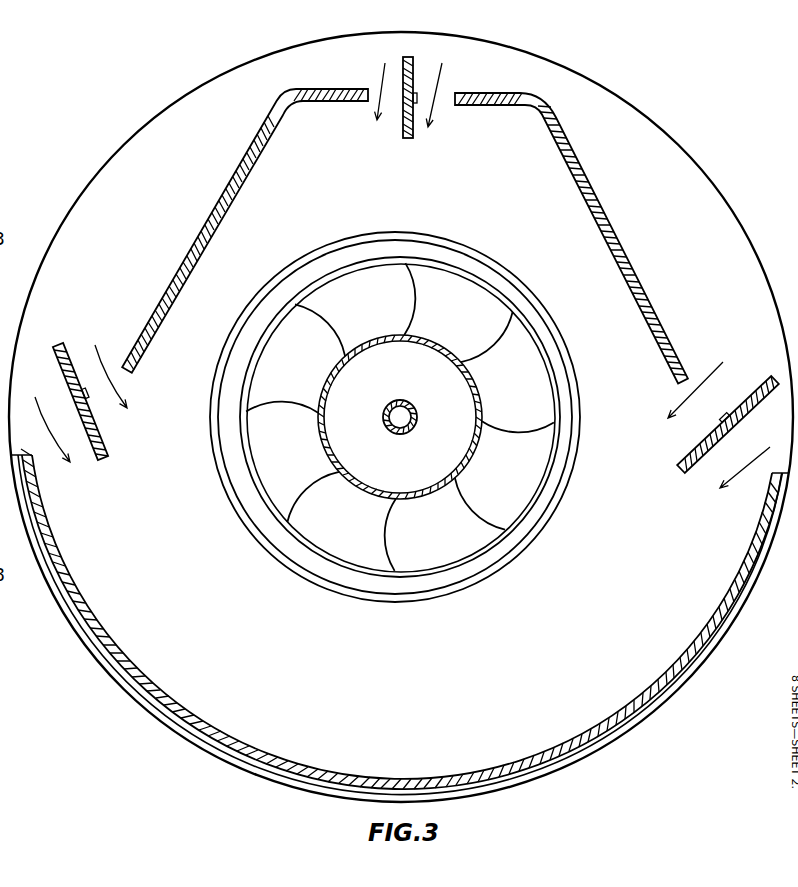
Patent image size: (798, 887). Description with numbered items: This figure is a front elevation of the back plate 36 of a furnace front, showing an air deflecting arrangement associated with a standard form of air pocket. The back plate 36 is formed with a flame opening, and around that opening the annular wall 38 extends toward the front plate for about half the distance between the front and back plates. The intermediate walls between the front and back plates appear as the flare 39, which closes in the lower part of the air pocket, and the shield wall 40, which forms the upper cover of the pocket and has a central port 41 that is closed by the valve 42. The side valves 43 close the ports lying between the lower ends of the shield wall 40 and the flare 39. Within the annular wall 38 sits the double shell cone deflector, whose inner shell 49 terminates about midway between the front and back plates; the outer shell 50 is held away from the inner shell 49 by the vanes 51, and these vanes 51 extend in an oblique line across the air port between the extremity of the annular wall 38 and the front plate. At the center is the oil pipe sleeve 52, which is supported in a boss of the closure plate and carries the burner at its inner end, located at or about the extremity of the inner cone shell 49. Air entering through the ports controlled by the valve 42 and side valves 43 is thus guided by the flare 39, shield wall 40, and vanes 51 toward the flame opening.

The back plate 36 is at (401, 417).
The annular wall 38 is at (548, 523).
The flare 39 is at (181, 705).
The shield wall 40 is at (187, 277).
The central port 41 is at (445, 97).
The valve 42 is at (403, 121).
The side valves 43 is at (101, 437).
The inner shell 49 is at (468, 467).
The outer shell 50 is at (255, 489).
The vanes 51 is at (309, 346).
The oil pipe sleeve 52 is at (418, 417).